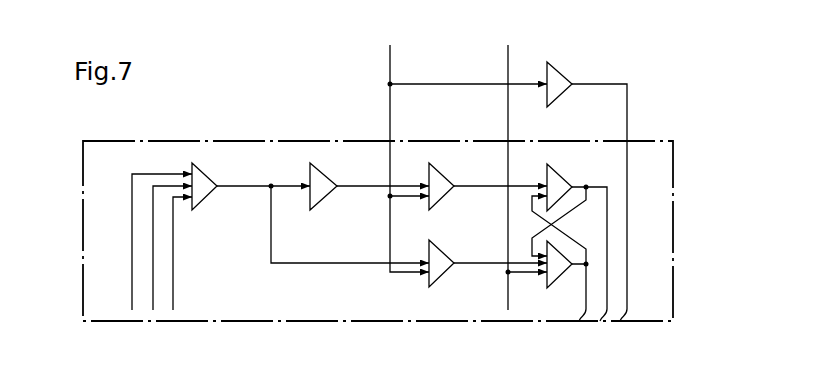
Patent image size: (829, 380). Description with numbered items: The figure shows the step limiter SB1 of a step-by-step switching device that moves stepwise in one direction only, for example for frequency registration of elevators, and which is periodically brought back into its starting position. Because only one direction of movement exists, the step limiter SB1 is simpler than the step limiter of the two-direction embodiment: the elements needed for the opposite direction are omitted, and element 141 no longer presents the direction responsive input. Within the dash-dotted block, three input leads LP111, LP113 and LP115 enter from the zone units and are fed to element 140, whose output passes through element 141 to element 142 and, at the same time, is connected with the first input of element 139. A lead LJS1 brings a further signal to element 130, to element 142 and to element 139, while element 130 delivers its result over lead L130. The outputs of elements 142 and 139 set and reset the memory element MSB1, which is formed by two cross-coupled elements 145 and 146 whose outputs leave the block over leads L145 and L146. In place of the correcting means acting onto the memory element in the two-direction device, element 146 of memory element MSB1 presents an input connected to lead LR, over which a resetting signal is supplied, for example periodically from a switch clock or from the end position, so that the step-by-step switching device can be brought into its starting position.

The element 130 is at (548, 69).
The element 139 is at (446, 280).
The element 140 is at (203, 172).
The element 141 is at (322, 172).
The element 142 is at (442, 172).
The element of memory element MSB1 145 is at (560, 172).
The element of memory element MSB1 146 is at (549, 279).
The step limiter SB1 is at (243, 141).
The memory element MSB1 is at (569, 234).
The lead LP111 is at (153, 242).
The lead LP113 is at (163, 248).
The lead LP115 is at (173, 253).
The lead LJS1 is at (459, 158).
The lead LR is at (518, 177).
The lead L130 is at (619, 348).
The lead L145 is at (599, 348).
The lead L146 is at (578, 348).